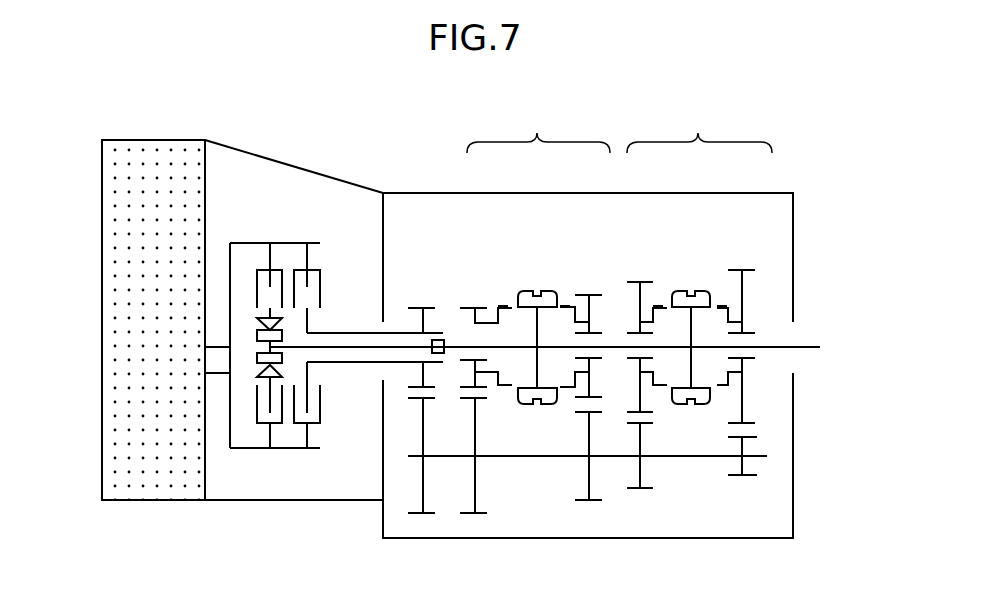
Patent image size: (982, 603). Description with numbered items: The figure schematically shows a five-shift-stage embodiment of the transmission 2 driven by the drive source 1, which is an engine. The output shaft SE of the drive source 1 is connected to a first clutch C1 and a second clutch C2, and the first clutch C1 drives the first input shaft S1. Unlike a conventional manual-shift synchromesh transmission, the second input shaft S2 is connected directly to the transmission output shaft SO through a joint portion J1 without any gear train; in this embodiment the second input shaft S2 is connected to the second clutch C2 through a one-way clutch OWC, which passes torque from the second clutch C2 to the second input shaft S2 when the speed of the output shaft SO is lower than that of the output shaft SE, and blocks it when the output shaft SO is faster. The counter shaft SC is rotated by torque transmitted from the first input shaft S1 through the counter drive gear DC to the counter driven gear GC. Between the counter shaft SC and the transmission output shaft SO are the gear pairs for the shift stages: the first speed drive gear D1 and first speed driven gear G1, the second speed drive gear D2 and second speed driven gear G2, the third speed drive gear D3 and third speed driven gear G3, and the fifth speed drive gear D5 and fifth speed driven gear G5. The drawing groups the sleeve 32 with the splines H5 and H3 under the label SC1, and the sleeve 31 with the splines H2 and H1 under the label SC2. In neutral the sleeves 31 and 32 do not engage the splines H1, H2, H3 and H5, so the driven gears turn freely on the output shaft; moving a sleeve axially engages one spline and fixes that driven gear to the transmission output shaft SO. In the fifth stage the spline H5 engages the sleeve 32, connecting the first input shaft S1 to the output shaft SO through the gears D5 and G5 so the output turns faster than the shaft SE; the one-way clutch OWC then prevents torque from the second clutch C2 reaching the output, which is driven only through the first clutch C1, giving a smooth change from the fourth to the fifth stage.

The drive source 1 is at (153, 140).
The transmission 2 is at (408, 192).
The output shaft of the drive source SE is at (216, 345).
The first input shaft S1 is at (337, 333).
The second input shaft S2 is at (358, 347).
The one-way clutch OWC is at (257, 358).
The second clutch C2 is at (255, 450).
The first clutch C1 is at (298, 450).
The joint portion J1 is at (440, 353).
The counter drive gear DC is at (420, 306).
The counter driven gear GC is at (415, 515).
The fifth speed driven gear G5 is at (483, 306).
The fifth speed drive gear D5 is at (478, 515).
The spline for the fifth shift stage H5 is at (505, 306).
The sleeve 32 is at (537, 291).
The third speed driven gear G3 is at (598, 293).
The third speed drive gear D3 is at (592, 502).
The spline of the third speed driven gear H3 is at (565, 306).
The first synchronizer clutch SC1 is at (538, 129).
The second speed driven gear G2 is at (638, 280).
The second speed drive gear D2 is at (647, 490).
The spline of the second speed driven gear H2 is at (662, 306).
The sleeve 31 is at (695, 291).
The first speed driven gear G1 is at (750, 268).
The first speed drive gear D1 is at (748, 478).
The spline of the first speed driven gear H1 is at (720, 306).
The second synchronizer clutch SC2 is at (699, 129).
The counter shaft SC is at (525, 460).
The transmission output shaft SO is at (801, 347).